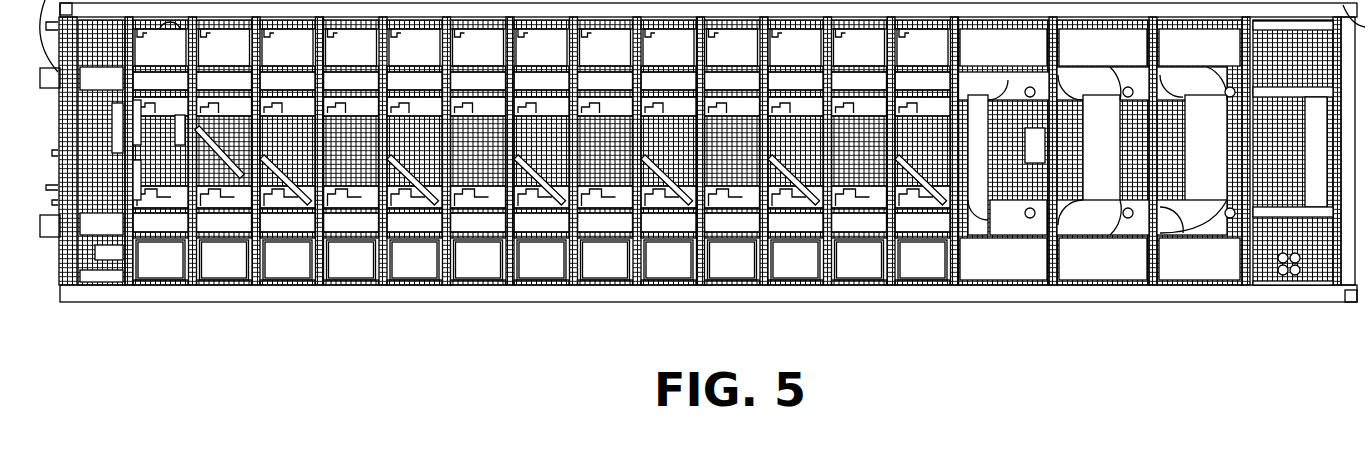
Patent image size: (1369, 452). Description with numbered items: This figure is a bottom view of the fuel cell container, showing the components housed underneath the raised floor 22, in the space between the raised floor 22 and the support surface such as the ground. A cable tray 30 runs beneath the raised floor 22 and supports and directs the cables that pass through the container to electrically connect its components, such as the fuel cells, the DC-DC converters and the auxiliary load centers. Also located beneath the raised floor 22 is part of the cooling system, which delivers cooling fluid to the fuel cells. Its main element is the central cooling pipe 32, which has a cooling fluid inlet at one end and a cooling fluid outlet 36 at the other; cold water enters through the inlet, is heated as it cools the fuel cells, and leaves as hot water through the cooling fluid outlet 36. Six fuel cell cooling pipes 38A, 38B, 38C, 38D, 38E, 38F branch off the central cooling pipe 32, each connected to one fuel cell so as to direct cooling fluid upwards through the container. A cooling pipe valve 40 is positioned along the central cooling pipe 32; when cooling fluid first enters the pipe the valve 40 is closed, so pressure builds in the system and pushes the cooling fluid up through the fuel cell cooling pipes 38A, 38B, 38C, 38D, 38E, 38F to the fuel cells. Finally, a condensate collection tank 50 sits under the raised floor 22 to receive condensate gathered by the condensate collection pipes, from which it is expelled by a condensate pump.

The raised floor 22 is at (1305, 245).
The cable tray 30 is at (1172, 255).
The central cooling pipe 32 is at (154, 225).
The cooling fluid outlet 36 is at (50, 238).
The fuel cell cooling pipe 38A is at (925, 195).
The fuel cell cooling pipe 38B is at (800, 195).
The fuel cell cooling pipe 38C is at (670, 195).
The fuel cell cooling pipe 38D is at (542, 195).
The fuel cell cooling pipe 38E is at (415, 195).
The fuel cell cooling pipe 38F is at (290, 195).
The cooling pipe valve 40 is at (978, 165).
The condensate collection tank 50 is at (1089, 255).